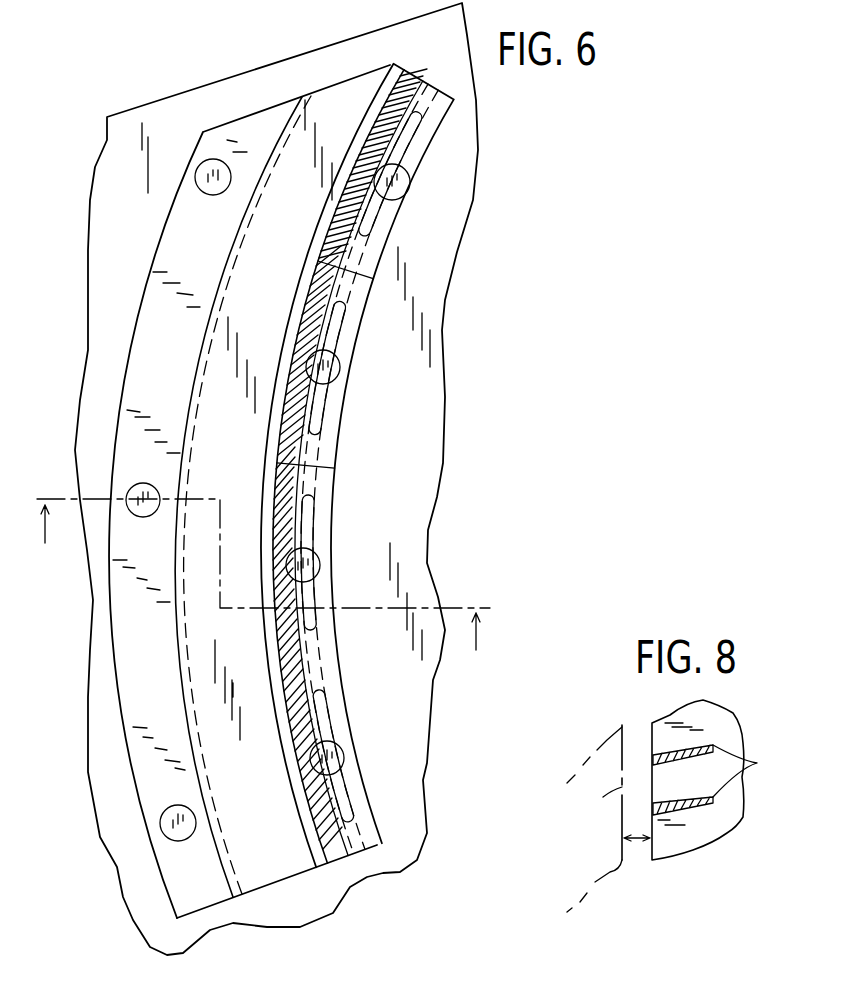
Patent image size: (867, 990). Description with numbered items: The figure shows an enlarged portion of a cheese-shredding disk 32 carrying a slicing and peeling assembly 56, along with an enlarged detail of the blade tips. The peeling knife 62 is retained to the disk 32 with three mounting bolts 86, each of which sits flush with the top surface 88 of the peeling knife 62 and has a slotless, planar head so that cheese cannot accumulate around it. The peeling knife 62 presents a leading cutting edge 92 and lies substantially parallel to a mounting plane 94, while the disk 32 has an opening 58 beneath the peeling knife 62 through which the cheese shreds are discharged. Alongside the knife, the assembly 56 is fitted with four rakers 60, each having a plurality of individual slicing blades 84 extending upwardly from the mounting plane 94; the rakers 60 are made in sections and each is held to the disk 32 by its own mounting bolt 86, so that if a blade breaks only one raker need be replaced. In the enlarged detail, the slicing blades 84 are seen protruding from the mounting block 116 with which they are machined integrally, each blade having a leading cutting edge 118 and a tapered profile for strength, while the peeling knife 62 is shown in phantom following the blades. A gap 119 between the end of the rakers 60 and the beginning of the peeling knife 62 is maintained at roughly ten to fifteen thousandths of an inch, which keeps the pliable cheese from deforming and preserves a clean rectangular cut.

In FIG. 6, the disk 32 is at (403, 710).
In FIG. 6, the slicing and peeling assembly 56 is at (293, 467).
In FIG. 6, the opening 58 is at (398, 78).
In FIG. 6, the raker 60 is at (386, 229).
In FIG. 8, the raker 60 is at (731, 778).
In FIG. 6, the peeling knife 62 is at (264, 308).
In FIG. 8, the peeling knife 62 is at (594, 818).
In FIG. 6, the individual slicing blades 84 is at (348, 232).
In FIG. 8, the individual slicing blades 84 is at (662, 763).
In FIG. 6, the mounting bolt 86 is at (216, 194).
In FIG. 6, the top surface 88 is at (178, 357).
In FIG. 6, the leading cutting edge 92 is at (273, 487).
In FIG. 6, the mounting plane 94 is at (308, 908).
In FIG. 8, the mounting block 116 is at (687, 818).
In FIG. 8, the leading cutting edge 118 is at (757, 763).
In FIG. 8, the gap 119 is at (637, 842).